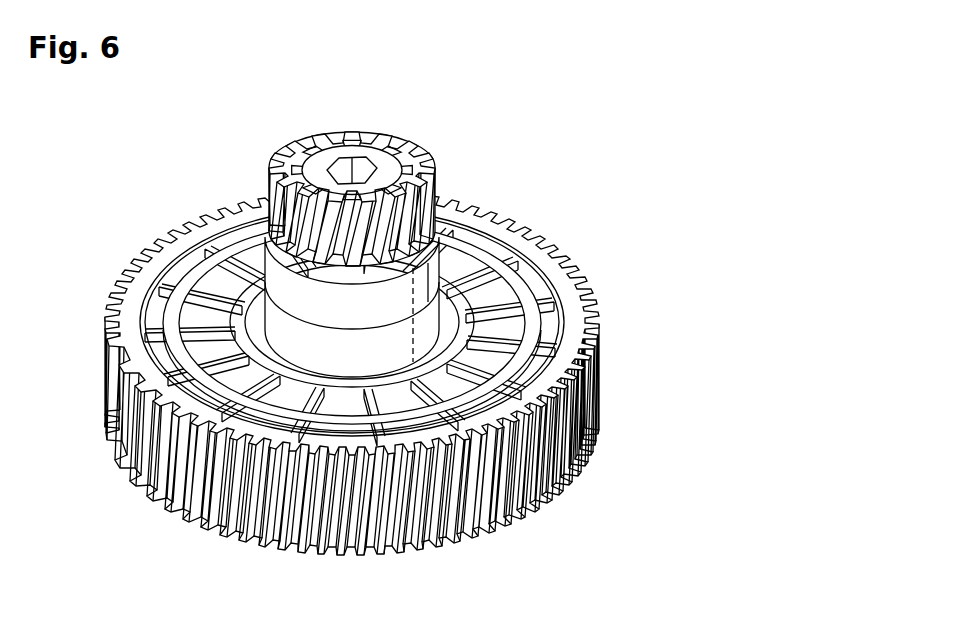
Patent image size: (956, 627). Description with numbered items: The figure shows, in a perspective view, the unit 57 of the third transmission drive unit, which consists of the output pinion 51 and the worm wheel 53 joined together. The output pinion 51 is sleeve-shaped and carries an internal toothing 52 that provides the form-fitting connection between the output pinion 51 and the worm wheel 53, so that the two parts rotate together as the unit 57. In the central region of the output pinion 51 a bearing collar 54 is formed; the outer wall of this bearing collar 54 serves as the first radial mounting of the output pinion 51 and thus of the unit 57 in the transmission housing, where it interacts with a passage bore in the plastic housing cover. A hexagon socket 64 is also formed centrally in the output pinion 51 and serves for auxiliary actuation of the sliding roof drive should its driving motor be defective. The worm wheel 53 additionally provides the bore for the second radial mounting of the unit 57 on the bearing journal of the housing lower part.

The output pinion 51 is at (420, 148).
The internal toothing 52 is at (352, 145).
The worm wheel 53 is at (603, 341).
The bearing collar 54 is at (425, 282).
The unit 57 is at (150, 166).
The hexagon socket 64 is at (362, 170).